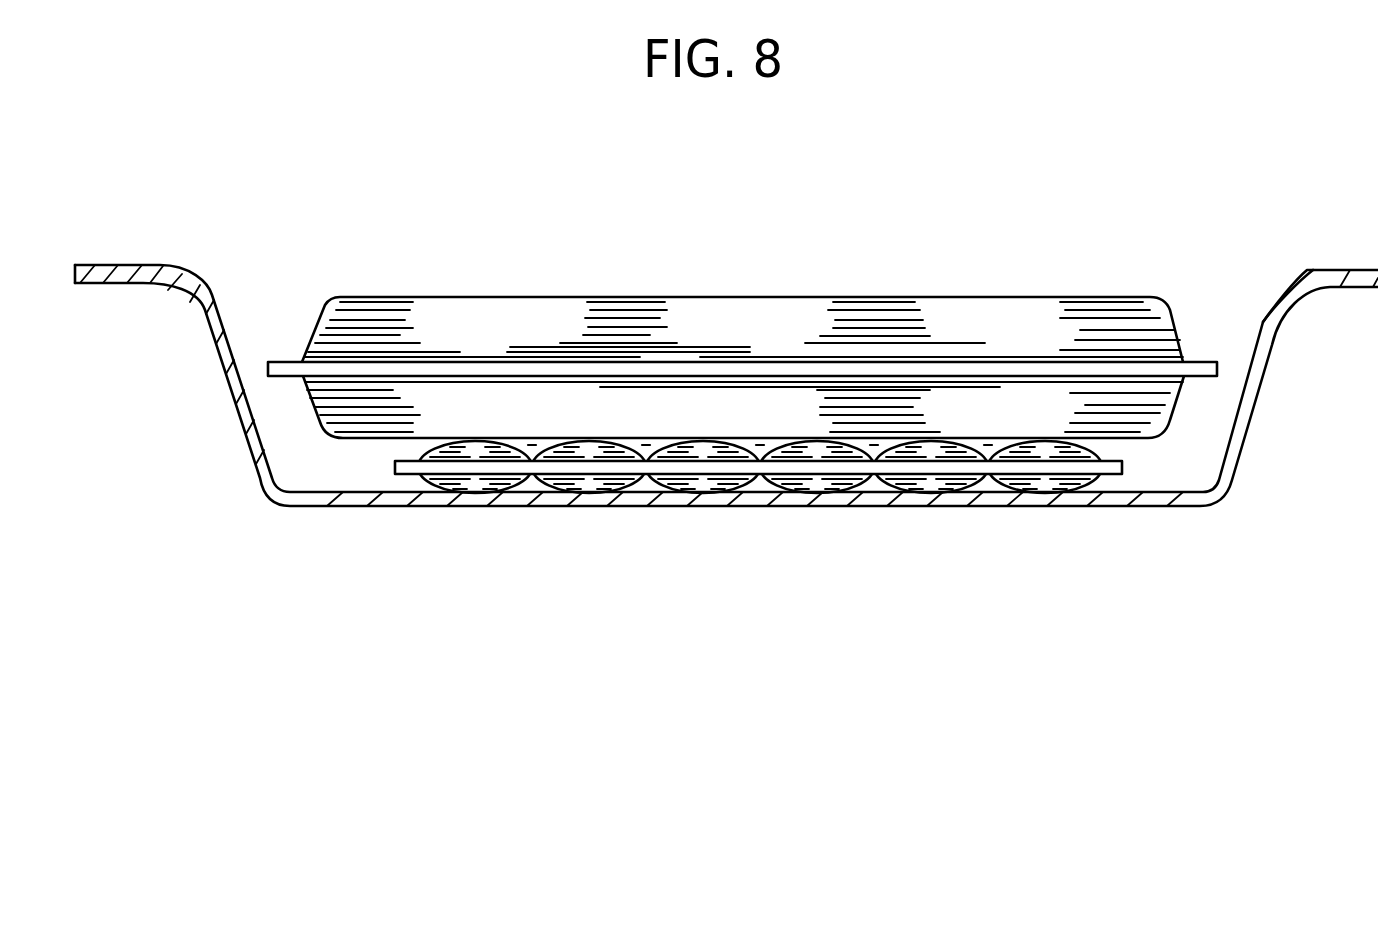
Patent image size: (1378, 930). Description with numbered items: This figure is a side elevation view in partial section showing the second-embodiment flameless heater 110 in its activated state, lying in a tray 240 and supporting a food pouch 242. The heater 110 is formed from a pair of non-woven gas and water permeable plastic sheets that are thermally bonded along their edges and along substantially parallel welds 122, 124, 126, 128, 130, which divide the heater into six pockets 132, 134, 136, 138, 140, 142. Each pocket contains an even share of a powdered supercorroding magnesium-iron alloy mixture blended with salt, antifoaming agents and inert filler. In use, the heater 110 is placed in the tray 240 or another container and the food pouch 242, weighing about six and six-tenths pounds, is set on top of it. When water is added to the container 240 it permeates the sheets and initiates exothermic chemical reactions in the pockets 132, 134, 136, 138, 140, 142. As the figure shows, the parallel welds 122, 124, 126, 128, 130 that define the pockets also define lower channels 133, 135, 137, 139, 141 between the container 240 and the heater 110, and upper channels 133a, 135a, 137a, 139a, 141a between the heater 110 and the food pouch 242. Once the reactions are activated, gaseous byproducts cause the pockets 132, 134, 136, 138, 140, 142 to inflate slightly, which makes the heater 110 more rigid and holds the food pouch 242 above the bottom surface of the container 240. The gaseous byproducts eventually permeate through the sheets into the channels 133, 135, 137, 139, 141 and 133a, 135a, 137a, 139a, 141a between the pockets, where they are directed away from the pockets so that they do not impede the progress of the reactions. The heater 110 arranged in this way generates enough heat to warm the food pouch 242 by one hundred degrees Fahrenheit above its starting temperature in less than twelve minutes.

The flameless heater 110 is at (393, 462).
The parallel weld 122 is at (995, 483).
The parallel weld 124 is at (877, 483).
The parallel weld 126 is at (788, 483).
The parallel weld 128 is at (650, 483).
The parallel weld 130 is at (532, 487).
The pocket 132 is at (1053, 485).
The lower channel 133 is at (982, 480).
The upper channel 133a is at (995, 447).
The pocket 134 is at (933, 483).
The lower channel 135 is at (903, 488).
The upper channel 135a is at (883, 447).
The pocket 136 is at (818, 483).
The lower channel 137 is at (760, 483).
The upper channel 137a is at (763, 447).
The pocket 138 is at (712, 483).
The lower channel 139 is at (663, 483).
The upper channel 139a is at (648, 447).
The pocket 140 is at (582, 483).
The lower channel 141 is at (538, 483).
The upper channel 141a is at (530, 447).
The pocket 142 is at (468, 483).
The tray 240 is at (1227, 463).
The food pouch 242 is at (423, 325).